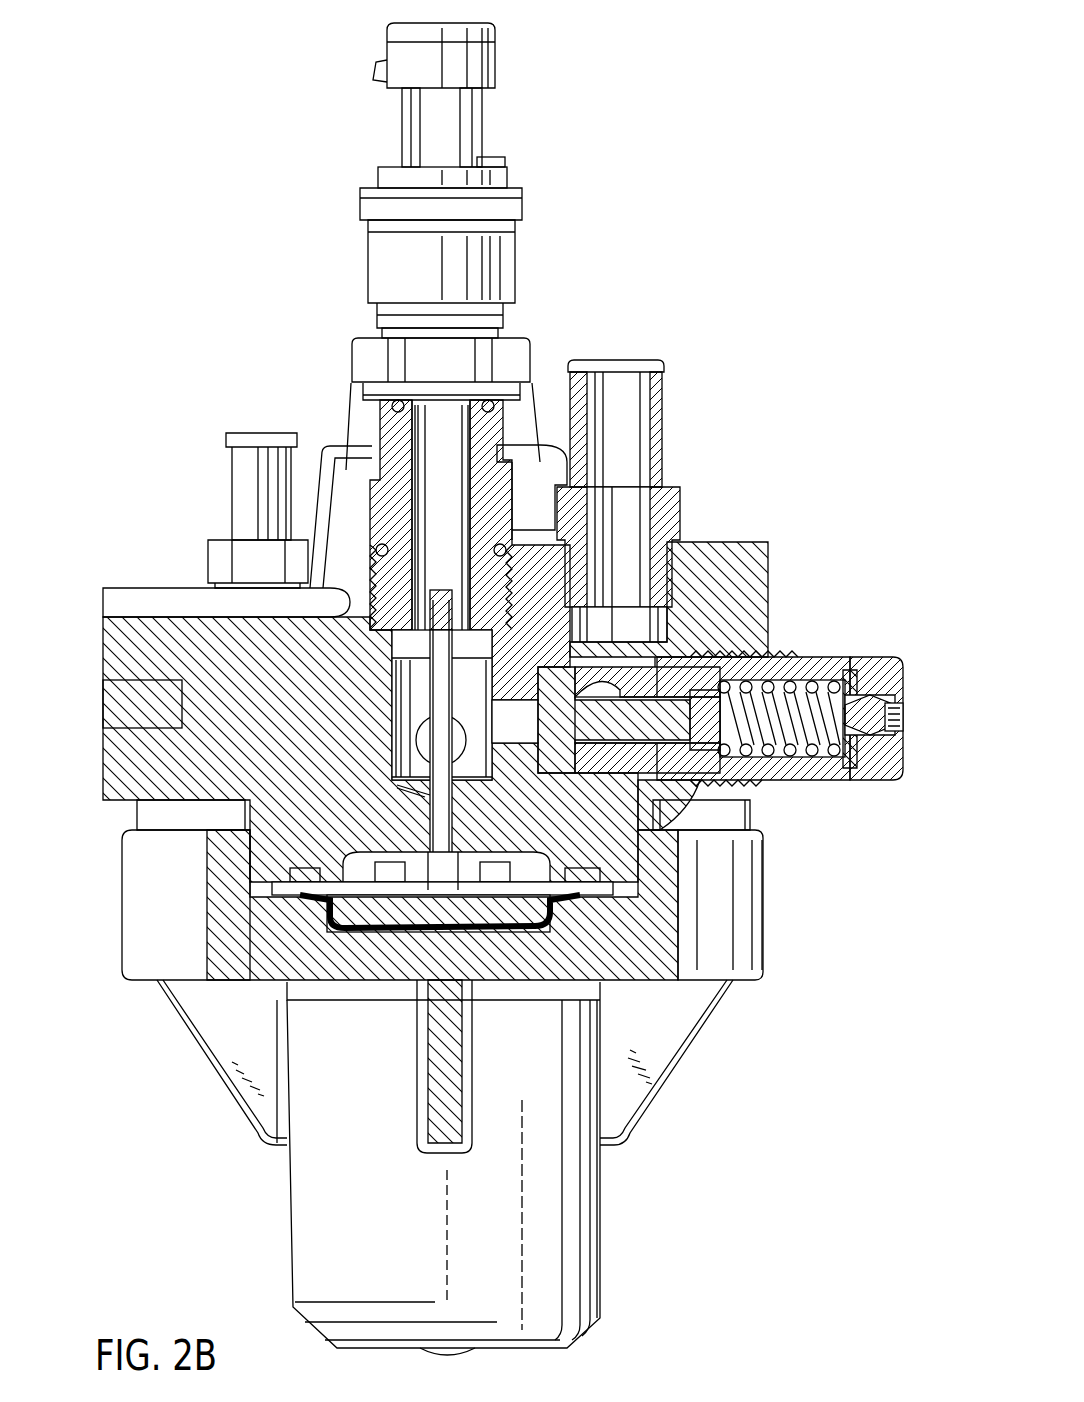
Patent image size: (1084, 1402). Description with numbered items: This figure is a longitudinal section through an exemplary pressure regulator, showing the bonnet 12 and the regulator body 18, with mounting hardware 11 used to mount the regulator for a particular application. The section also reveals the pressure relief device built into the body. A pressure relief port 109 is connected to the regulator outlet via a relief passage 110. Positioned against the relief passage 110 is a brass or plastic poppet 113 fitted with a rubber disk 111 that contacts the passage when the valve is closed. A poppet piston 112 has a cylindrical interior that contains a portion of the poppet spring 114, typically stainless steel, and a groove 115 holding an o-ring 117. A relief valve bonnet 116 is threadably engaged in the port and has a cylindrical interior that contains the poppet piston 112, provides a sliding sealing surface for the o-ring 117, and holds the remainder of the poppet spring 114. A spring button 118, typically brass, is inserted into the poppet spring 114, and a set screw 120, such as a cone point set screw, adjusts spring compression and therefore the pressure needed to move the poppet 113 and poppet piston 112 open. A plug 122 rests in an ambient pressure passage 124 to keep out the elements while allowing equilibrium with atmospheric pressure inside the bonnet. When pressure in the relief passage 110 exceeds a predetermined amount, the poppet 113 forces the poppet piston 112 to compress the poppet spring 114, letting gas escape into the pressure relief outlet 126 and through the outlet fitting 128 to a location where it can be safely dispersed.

The mounting hardware 11 is at (383, 258).
The bonnet 12 is at (305, 1247).
The regulator body 18 is at (107, 642).
The pressure relief port 109 is at (633, 817).
The relief passage 110 is at (507, 736).
The rubber disk 111 is at (552, 760).
The poppet piston 112 is at (807, 766).
The poppet 113 is at (470, 550).
The poppet spring 114 is at (786, 656).
The groove 115 is at (588, 772).
The relief valve bonnet 116 is at (876, 656).
The o-ring 117 is at (700, 802).
The spring button 118 is at (857, 746).
The set screw 120 is at (900, 708).
The plug 122 is at (840, 662).
The ambient pressure passage 124 is at (820, 660).
The pressure relief outlet 126 is at (667, 628).
The outlet fitting 128 is at (662, 410).